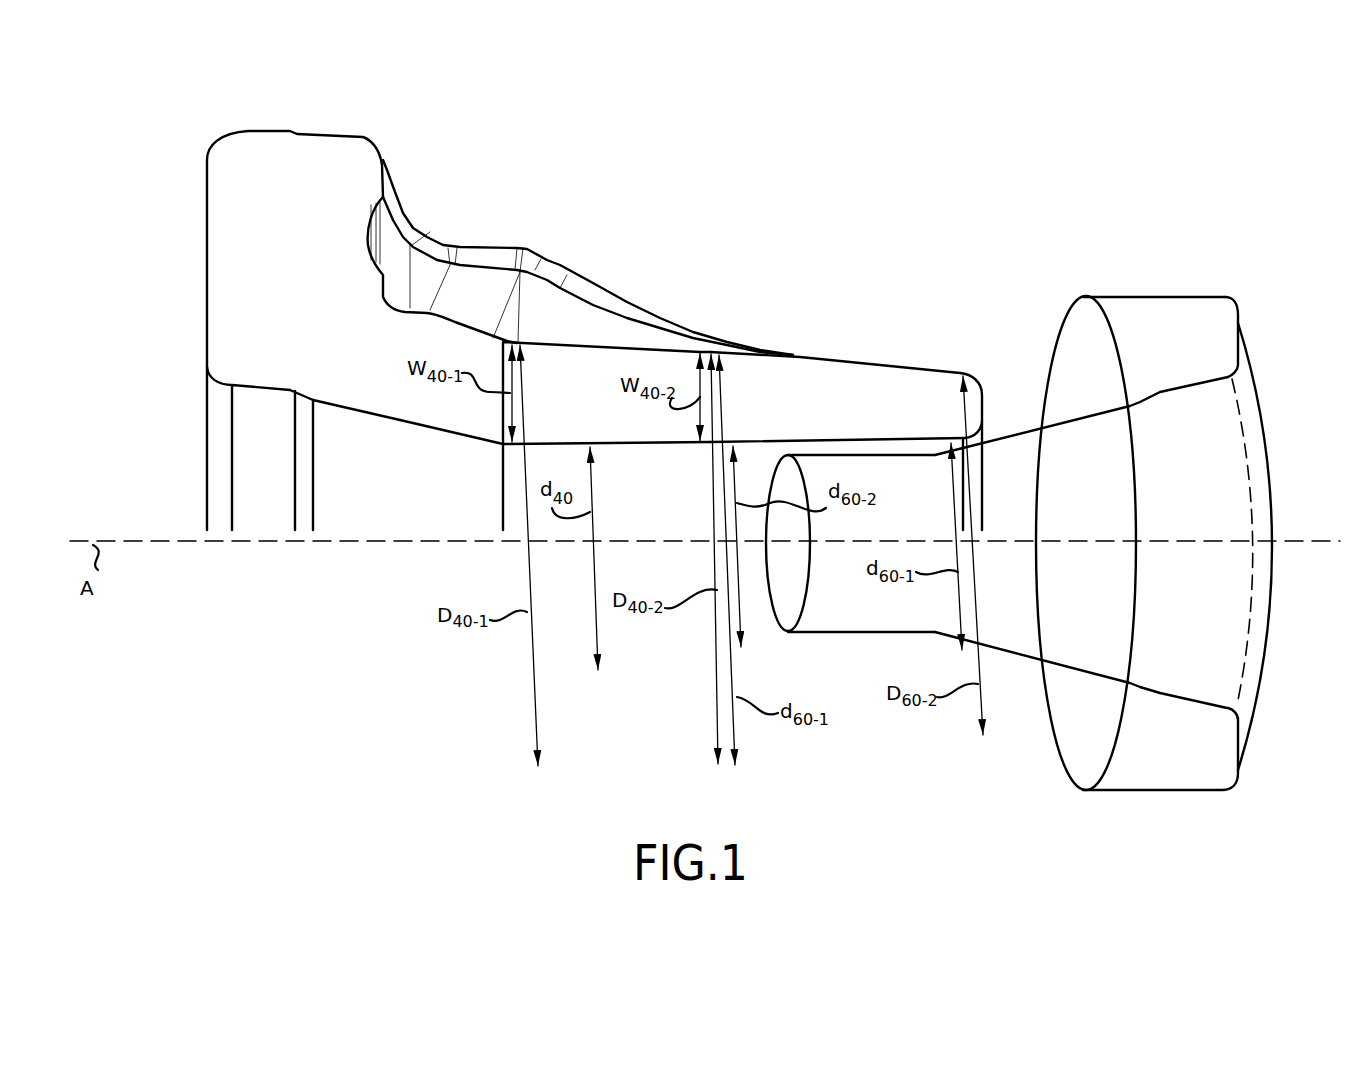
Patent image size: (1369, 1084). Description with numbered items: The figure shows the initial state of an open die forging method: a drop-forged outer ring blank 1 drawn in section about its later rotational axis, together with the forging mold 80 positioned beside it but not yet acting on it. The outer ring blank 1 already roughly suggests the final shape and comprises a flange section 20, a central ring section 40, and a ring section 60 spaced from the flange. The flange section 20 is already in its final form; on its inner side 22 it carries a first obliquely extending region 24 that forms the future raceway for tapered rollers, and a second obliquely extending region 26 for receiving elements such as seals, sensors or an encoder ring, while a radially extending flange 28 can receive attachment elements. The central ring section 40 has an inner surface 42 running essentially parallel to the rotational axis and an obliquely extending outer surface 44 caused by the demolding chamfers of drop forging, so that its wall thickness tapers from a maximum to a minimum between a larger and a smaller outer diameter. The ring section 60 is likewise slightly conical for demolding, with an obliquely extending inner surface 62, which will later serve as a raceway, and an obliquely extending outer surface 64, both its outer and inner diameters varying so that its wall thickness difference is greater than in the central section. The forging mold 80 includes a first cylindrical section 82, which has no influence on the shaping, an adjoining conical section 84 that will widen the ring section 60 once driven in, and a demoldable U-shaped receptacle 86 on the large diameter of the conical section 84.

The outer ring blank 1 is at (716, 456).
The flange section 20 is at (338, 330).
The inner side 22 is at (361, 419).
The first obliquely extending region 24 is at (438, 432).
The second obliquely extending region 26 is at (257, 390).
The radially extending flange 28 is at (255, 211).
The central ring section 40 is at (606, 436).
The inner surface 42 is at (648, 448).
The obliquely extending outer surface 44 is at (610, 347).
The ring section 60 is at (846, 409).
The obliquely extending inner surface 62 is at (882, 448).
The obliquely extending outer surface 64 is at (835, 358).
The forging mold 80 is at (1103, 495).
The cylindrical section 82 is at (832, 611).
The conical section 84 is at (1020, 634).
The U-shaped receptacle 86 is at (1121, 288).